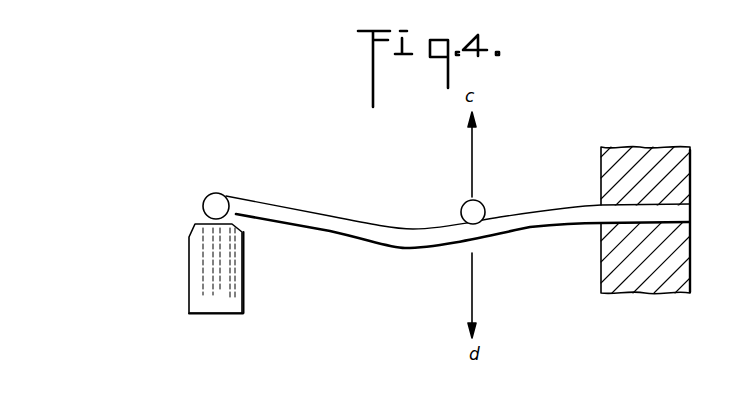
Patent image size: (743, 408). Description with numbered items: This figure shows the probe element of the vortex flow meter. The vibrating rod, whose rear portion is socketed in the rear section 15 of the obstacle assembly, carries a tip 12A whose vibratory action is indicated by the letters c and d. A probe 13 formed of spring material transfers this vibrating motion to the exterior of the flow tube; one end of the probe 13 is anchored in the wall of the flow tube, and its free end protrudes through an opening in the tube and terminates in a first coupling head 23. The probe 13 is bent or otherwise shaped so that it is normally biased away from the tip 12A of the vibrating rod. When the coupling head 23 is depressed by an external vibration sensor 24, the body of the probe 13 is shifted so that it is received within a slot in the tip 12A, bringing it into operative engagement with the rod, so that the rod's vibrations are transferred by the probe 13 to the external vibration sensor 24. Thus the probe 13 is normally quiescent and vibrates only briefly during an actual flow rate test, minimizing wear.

The probe 13 is at (353, 188).
The tip of the rod 12A is at (485, 204).
The rear section 15 is at (691, 175).
The first coupling head 23 is at (221, 193).
The external vibration sensor 24 is at (145, 267).